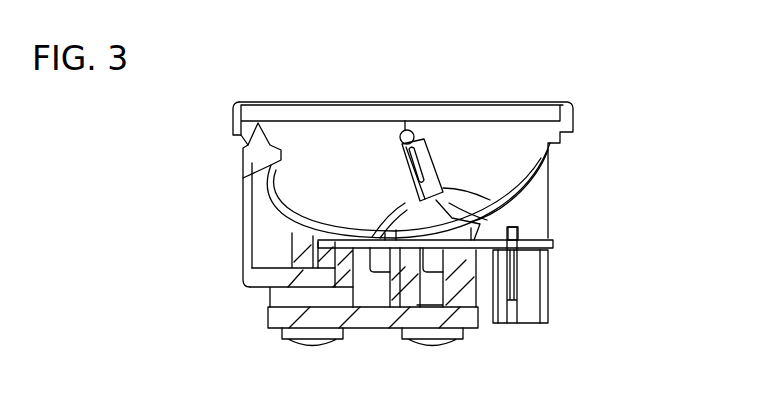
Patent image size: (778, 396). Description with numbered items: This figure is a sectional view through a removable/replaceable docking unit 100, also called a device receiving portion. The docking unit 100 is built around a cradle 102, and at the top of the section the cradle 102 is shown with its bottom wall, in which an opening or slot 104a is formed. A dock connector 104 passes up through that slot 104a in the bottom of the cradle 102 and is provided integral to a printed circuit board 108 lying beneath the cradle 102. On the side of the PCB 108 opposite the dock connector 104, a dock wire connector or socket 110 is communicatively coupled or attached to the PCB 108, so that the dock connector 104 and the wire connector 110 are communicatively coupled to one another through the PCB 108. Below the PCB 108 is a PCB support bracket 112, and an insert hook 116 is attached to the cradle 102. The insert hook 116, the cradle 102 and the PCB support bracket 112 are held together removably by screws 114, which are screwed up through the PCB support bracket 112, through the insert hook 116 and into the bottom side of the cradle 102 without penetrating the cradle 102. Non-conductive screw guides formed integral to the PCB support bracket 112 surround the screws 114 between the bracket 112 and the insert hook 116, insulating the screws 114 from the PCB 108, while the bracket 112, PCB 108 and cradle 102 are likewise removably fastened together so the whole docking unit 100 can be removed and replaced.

The removable docking unit 100 is at (152, 113).
The cradle 102 is at (350, 151).
The dock connector 104 is at (462, 193).
The opening or slot 104a is at (446, 190).
The printed circuit board 108 is at (553, 246).
The dock wire connector or socket 110 is at (533, 290).
The PCB support bracket 112 is at (292, 319).
The screws 114 is at (305, 346).
The insert hook 116 is at (245, 277).